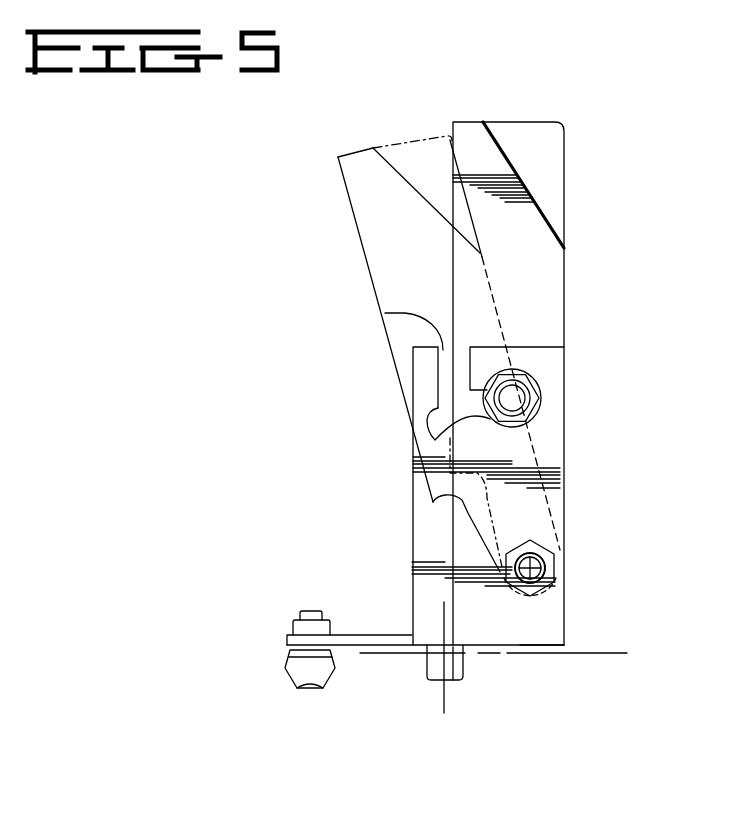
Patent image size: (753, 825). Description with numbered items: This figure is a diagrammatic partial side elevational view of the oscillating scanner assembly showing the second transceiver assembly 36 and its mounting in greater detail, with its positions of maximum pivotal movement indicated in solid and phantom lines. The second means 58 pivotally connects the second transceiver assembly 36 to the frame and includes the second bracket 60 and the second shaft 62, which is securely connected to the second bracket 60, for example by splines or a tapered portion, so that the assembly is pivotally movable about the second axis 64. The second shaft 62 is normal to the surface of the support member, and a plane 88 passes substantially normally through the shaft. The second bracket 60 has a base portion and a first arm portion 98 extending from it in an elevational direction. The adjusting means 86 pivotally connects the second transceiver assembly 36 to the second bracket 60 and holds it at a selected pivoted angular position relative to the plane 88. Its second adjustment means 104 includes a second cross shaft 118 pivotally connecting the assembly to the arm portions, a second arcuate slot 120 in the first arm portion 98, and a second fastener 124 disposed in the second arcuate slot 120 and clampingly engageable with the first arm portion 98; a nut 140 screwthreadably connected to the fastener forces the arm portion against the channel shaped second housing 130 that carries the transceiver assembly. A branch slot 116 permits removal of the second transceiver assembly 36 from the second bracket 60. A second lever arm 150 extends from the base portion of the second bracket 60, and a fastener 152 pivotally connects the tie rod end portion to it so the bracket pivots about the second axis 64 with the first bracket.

The second transceiver assembly 36 is at (570, 265).
The second means 58 is at (572, 601).
The second bracket 60 is at (517, 632).
The second shaft 62 is at (463, 663).
The second axis 64 is at (443, 695).
The adjusting means 86 is at (573, 455).
The plane 88 is at (597, 652).
The first arm portion 98 is at (457, 547).
The second adjustment means 104 is at (558, 428).
The branch slot 116 is at (385, 313).
The second cross shaft 118 is at (553, 552).
The second arcuate slot 120 is at (428, 448).
The second fastener 124 is at (532, 395).
The second housing 130 is at (537, 222).
The nut 140 is at (527, 387).
The second lever arm 150 is at (377, 633).
The fastener 152 is at (287, 655).